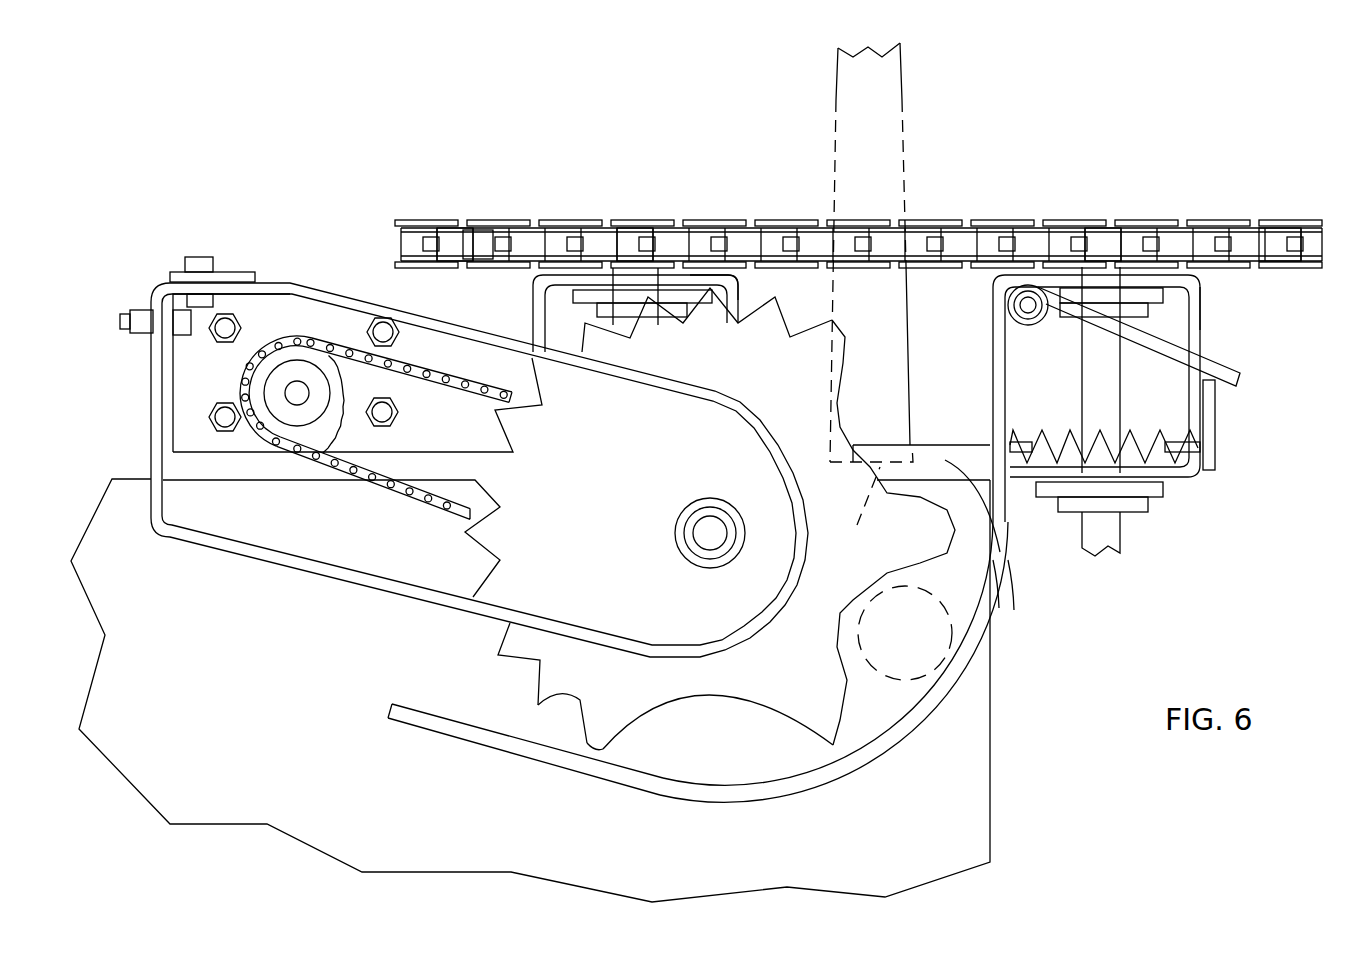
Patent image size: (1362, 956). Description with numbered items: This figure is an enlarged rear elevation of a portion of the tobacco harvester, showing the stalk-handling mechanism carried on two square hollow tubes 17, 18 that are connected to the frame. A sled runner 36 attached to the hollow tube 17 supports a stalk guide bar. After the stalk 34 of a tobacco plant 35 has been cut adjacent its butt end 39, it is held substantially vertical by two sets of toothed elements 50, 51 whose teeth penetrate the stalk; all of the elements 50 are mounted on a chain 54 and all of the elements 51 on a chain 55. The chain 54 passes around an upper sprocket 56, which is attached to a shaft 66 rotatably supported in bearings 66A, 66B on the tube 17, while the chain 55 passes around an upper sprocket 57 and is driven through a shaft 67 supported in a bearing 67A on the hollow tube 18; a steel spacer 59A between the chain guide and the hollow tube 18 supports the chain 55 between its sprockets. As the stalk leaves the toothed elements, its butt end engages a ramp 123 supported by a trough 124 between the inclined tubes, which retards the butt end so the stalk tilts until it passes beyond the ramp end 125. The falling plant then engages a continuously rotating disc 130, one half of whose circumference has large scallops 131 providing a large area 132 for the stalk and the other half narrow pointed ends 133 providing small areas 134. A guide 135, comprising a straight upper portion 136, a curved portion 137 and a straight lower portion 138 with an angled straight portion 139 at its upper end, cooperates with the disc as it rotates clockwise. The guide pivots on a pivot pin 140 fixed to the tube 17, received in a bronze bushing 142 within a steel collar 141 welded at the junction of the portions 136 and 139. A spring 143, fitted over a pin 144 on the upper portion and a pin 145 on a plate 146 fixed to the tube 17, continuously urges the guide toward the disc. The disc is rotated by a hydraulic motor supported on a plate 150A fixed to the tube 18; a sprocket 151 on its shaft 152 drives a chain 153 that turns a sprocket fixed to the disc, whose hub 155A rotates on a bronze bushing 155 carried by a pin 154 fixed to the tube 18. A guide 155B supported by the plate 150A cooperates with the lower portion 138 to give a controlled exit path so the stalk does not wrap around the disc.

The square hollow tube 17 is at (1203, 297).
The square hollow tube 18 is at (742, 298).
The stalk 34 is at (908, 196).
The tobacco plant 35 is at (914, 135).
The sled runner 36 is at (913, 647).
The butt end 39 is at (860, 508).
The toothed elements 50 is at (1307, 219).
The toothed elements 51 is at (445, 220).
The chain 54 is at (1278, 246).
The chain 55 is at (458, 240).
The upper sprocket 56 is at (1100, 240).
The upper sprocket 57 is at (632, 237).
The steel spacer 59A is at (714, 269).
The shaft 66 is at (1122, 550).
The bearing 66A is at (1177, 303).
The bearing 66B is at (1172, 503).
The shaft 67 is at (566, 293).
The bearing 67A is at (584, 323).
The ramp 123 is at (917, 442).
The trough 124 is at (982, 502).
The end 125 is at (1009, 591).
The disc 130 is at (603, 756).
The scallops 131 is at (838, 758).
The area 132 is at (697, 747).
The pointed ends 133 is at (536, 706).
The areas 134 is at (579, 704).
The guide 135 is at (1012, 602).
The straight upper portion 136 is at (1000, 378).
The curved portion 137 is at (885, 757).
The straight lower portion 138 is at (422, 727).
The straight portion 139 is at (1225, 372).
The pivot pin 140 is at (1030, 320).
The steel collar 141 is at (1046, 316).
The bronze bushing 142 is at (1050, 325).
The spring 143 is at (1127, 432).
The pin 144 is at (1025, 440).
The pin 145 is at (1180, 468).
The plate 146 is at (1216, 430).
The plate 150A is at (255, 313).
The sprocket 151 is at (340, 422).
The shaft 152 is at (298, 406).
The chain 153 is at (441, 513).
The pin 154 is at (700, 515).
The bronze bushing 155 is at (687, 525).
The hub 155A is at (680, 543).
The guide 155B is at (266, 562).